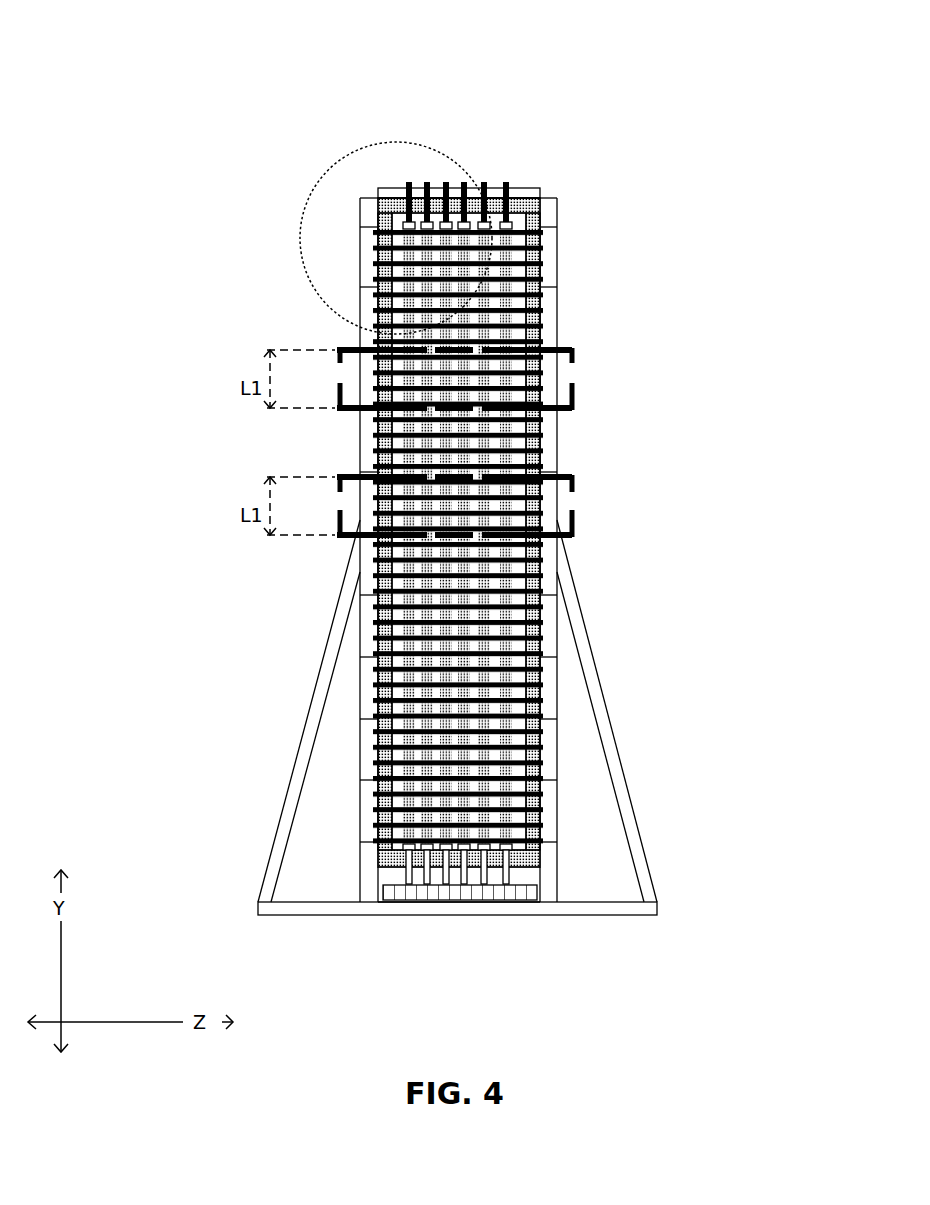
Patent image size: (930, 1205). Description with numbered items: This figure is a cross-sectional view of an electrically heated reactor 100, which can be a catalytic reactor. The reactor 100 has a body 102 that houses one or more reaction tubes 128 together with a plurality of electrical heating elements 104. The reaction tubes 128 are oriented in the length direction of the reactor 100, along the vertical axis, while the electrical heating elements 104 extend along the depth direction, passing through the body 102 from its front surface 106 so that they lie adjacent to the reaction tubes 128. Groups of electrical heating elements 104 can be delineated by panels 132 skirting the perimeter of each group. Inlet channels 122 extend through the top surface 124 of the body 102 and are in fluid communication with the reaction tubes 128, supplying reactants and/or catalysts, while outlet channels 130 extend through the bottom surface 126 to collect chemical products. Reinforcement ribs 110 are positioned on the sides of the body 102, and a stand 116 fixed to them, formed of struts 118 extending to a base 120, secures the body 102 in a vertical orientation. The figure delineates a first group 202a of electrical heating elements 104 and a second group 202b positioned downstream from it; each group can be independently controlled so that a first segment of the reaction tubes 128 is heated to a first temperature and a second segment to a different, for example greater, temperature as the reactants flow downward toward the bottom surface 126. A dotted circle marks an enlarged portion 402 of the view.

The reactor 100 is at (205, 42).
The body 102 is at (530, 215).
The electrical heating elements 104 is at (372, 247).
The front surface 106 is at (377, 208).
The reinforcement ribs 110 is at (548, 892).
The stand 116 is at (536, 717).
The struts 118 is at (653, 865).
The base 120 is at (637, 908).
The inlet channels 122 is at (508, 182).
The top surface 124 is at (527, 195).
The bottom surface 126 is at (522, 870).
The reaction tubes 128 is at (510, 313).
The outlet channels 130 is at (405, 878).
The panels 132 is at (367, 270).
The first group 202a is at (577, 358).
The second group 202b is at (577, 487).
The enlarged portion 402 is at (396, 238).